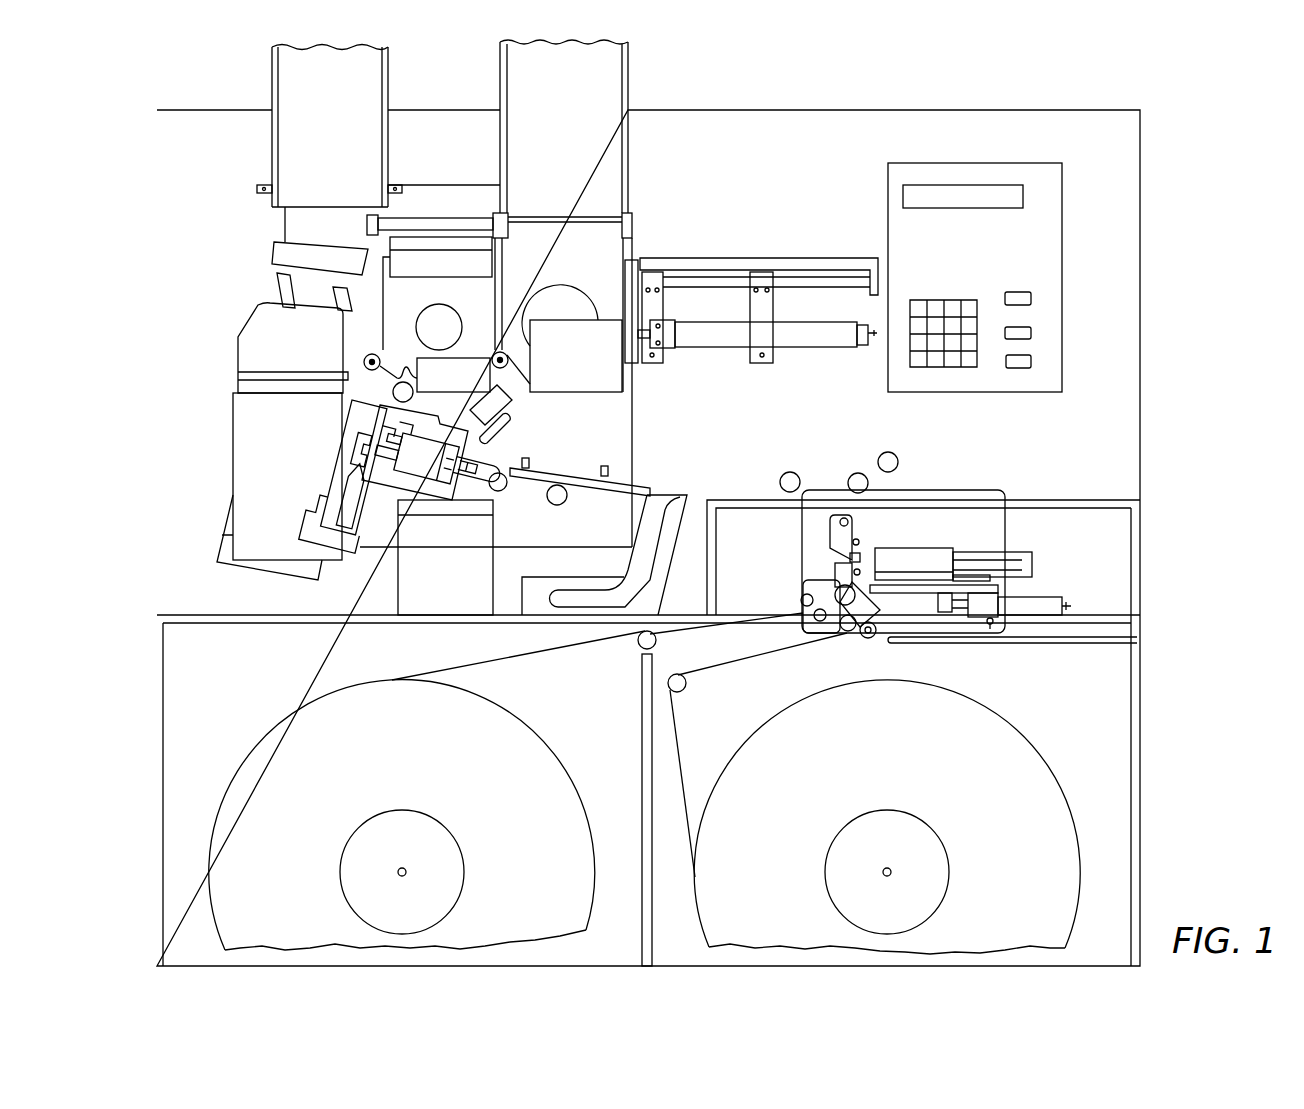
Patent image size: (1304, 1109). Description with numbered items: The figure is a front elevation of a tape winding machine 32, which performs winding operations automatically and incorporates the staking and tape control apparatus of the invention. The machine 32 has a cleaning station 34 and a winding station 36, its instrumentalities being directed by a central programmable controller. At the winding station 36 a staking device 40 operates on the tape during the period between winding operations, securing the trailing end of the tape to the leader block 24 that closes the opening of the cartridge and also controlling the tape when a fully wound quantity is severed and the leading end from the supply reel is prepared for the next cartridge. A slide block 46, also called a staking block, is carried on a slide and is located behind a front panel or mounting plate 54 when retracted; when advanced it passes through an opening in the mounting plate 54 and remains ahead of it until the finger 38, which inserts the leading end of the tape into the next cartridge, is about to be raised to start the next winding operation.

The tape winding machine 32 is at (157, 550).
The front panel or mounting plate 54 is at (765, 191).
The cleaning station 34 is at (568, 271).
The winding station 36 is at (448, 301).
The leader block 24 is at (362, 450).
The finger 38 is at (363, 500).
The slide block (staking block) 46 is at (422, 467).
The staking device 40 is at (499, 454).